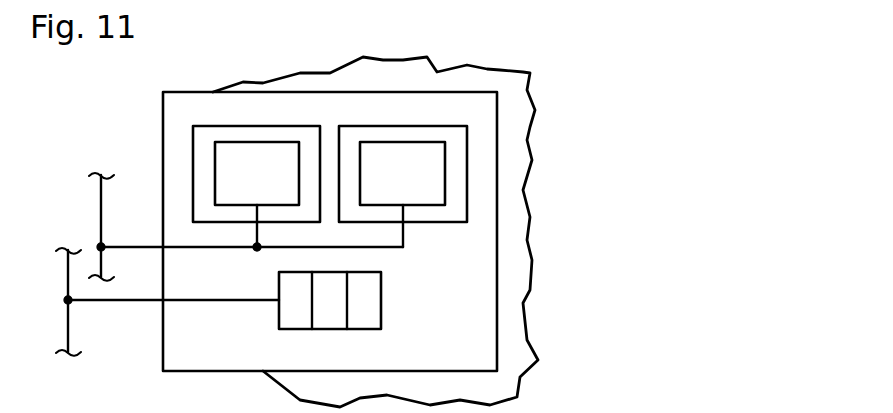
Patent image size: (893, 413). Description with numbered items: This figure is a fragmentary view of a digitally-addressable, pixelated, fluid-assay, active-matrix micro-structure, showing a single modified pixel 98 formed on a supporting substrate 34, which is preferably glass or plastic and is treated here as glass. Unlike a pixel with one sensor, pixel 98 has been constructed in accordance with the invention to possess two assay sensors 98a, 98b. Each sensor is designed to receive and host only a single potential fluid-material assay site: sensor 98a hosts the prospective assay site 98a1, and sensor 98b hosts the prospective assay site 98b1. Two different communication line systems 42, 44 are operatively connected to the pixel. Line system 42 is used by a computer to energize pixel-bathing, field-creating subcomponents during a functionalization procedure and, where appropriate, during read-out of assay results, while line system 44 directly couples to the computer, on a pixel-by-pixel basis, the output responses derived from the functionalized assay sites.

The substrate 34 is at (522, 270).
The pixel 98 is at (419, 92).
The assay sensor 98a is at (212, 125).
The prospective assay site 98a1 is at (240, 142).
The assay sensor 98b is at (467, 148).
The prospective assay site 98b1 is at (418, 205).
The communication line system 44 is at (101, 197).
The communication line system 42 is at (112, 300).